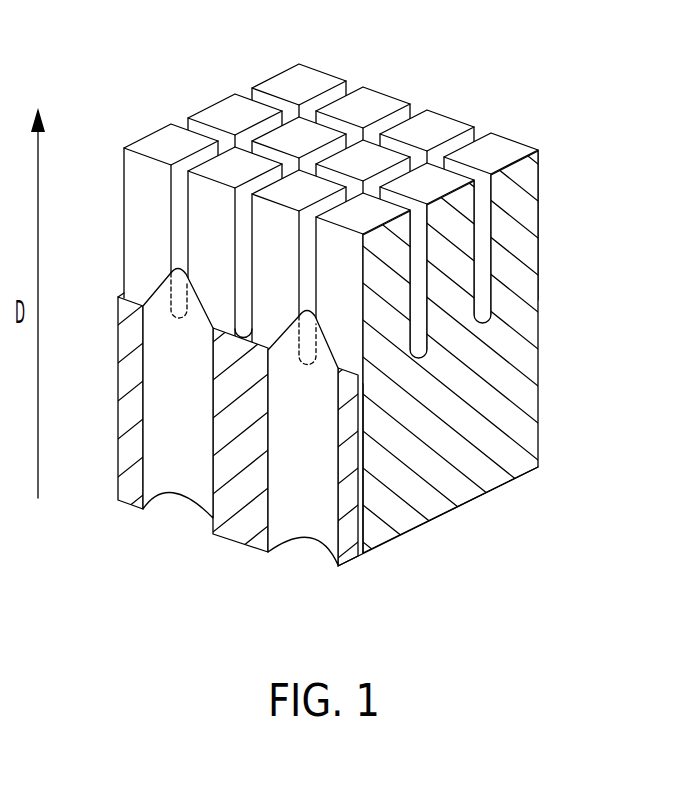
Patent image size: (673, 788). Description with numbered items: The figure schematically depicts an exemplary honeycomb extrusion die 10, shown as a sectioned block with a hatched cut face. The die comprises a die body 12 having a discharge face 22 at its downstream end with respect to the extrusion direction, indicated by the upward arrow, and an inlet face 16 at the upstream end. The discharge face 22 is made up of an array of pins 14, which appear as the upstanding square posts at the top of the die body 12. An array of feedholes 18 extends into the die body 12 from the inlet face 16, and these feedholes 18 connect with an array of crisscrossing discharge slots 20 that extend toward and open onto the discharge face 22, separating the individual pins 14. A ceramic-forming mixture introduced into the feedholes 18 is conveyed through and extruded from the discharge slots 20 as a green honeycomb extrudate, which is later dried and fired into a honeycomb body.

The honeycomb extrusion die 10 is at (353, 349).
The die body 12 is at (522, 243).
The pins 14 is at (363, 208).
The inlet face 16 is at (510, 486).
The feedholes 18 is at (178, 470).
The discharge slots 20 is at (243, 238).
The discharge face 22 is at (538, 152).